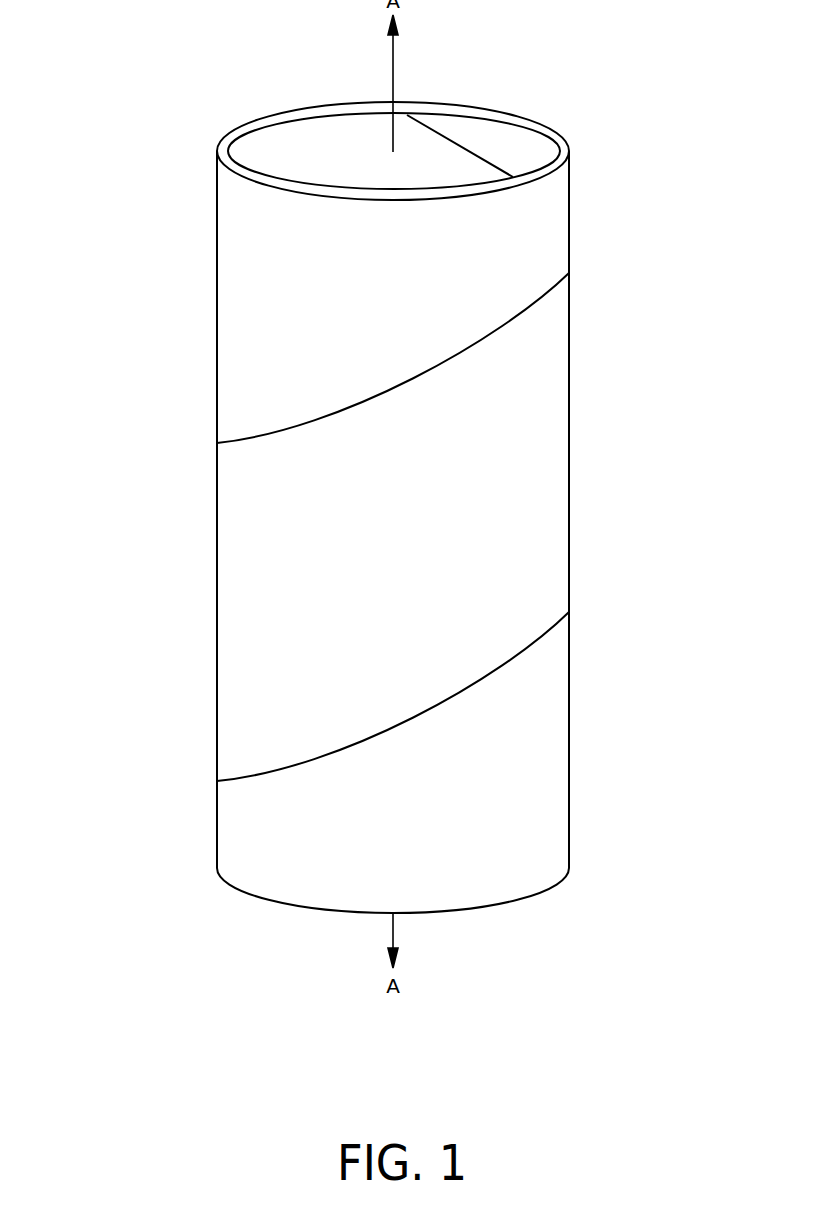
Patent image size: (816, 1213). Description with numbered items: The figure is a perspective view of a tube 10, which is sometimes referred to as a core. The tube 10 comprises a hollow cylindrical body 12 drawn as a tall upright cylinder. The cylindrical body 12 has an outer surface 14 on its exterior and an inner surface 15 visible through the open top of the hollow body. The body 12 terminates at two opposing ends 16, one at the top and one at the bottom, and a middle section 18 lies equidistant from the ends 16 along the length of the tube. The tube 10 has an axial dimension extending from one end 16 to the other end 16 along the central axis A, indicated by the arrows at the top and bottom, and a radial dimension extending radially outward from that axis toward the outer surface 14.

The tube 10 is at (366, 480).
The hollow cylindrical body 12 is at (219, 350).
The outer surface 14 is at (253, 412).
The inner surface 15 is at (262, 153).
The opposing ends 16 is at (565, 151).
The middle section 18 is at (543, 513).